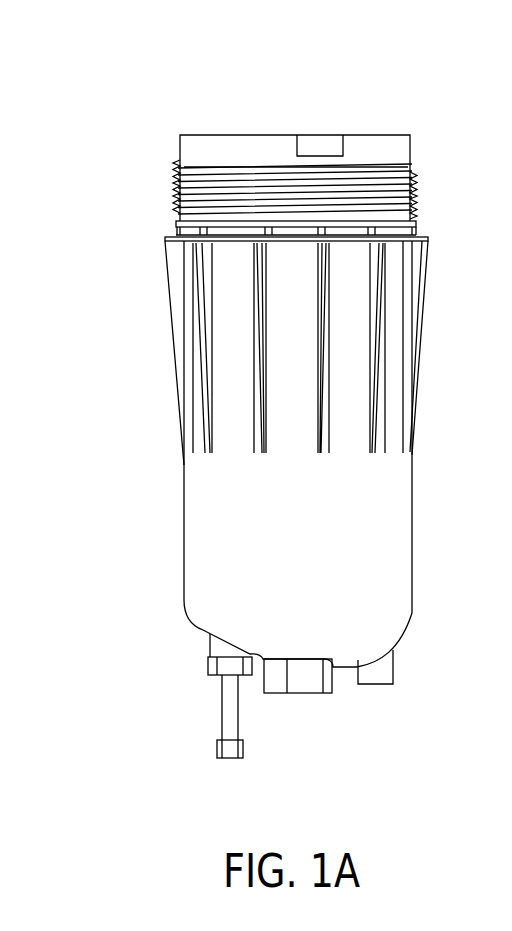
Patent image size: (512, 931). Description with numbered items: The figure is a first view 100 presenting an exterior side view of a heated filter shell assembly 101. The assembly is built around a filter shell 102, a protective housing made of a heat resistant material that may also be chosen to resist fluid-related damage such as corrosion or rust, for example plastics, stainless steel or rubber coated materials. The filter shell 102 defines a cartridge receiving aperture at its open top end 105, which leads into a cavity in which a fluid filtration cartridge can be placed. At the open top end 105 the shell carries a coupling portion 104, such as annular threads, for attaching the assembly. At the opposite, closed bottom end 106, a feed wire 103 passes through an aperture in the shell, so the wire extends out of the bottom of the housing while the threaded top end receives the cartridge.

The first view 100 is at (200, 112).
The heated filter shell assembly 101 is at (238, 100).
The filter shell 102 is at (198, 511).
The feed wire 103 is at (228, 733).
The coupling portion 104 is at (186, 190).
The open top end 105 is at (508, 138).
The closed bottom end 106 is at (446, 572).